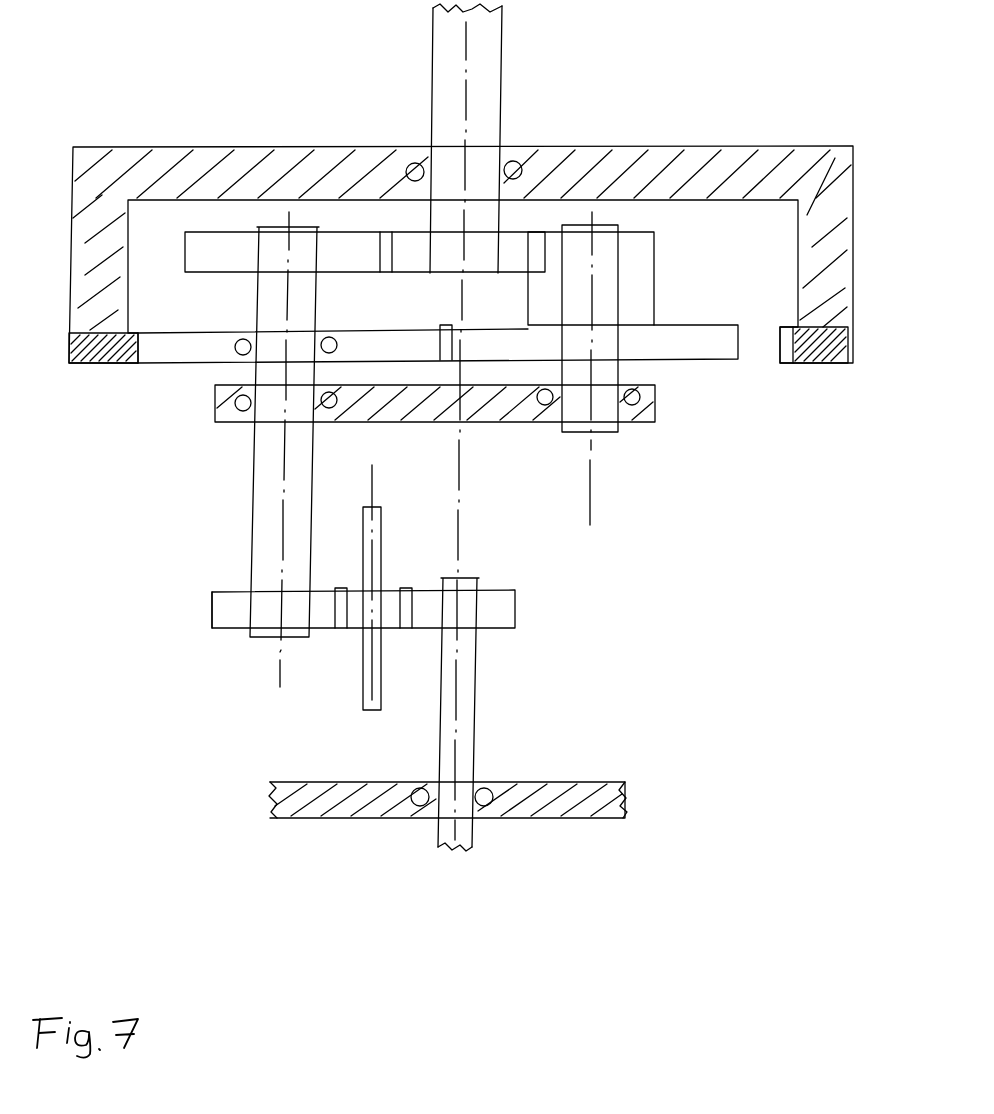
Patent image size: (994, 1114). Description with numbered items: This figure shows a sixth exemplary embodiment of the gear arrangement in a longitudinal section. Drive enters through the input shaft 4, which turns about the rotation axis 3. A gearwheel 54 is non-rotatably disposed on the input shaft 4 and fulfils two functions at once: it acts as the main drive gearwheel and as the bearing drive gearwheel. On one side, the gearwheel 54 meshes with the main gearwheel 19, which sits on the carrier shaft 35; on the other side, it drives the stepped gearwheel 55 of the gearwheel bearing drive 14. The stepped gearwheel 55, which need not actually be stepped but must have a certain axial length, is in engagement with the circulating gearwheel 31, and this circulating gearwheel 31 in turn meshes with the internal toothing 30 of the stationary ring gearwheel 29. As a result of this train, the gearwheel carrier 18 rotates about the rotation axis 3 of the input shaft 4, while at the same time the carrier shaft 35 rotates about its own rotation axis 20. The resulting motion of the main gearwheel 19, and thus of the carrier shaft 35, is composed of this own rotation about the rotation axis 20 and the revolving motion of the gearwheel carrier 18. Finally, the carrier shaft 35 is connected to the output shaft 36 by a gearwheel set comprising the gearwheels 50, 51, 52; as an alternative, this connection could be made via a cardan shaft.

The rotation axis 3 is at (468, 100).
The input shaft 4 is at (498, 52).
The gearwheel bearing drive 14 is at (657, 422).
The gearwheel carrier 18 is at (525, 422).
The main gearwheel 19 is at (205, 232).
The rotation axis 20 is at (278, 668).
The stationary ring gearwheel 29 is at (842, 273).
The internal toothing 30 is at (793, 337).
The circulating gearwheel 31 is at (165, 367).
The carrier shaft 35 is at (252, 510).
The output shaft 36 is at (476, 752).
The gearwheel 50 is at (212, 628).
The gearwheel 51 is at (386, 587).
The gearwheel 52 is at (518, 603).
The gearwheel 54 is at (523, 230).
The stepped gearwheel 55 is at (724, 355).